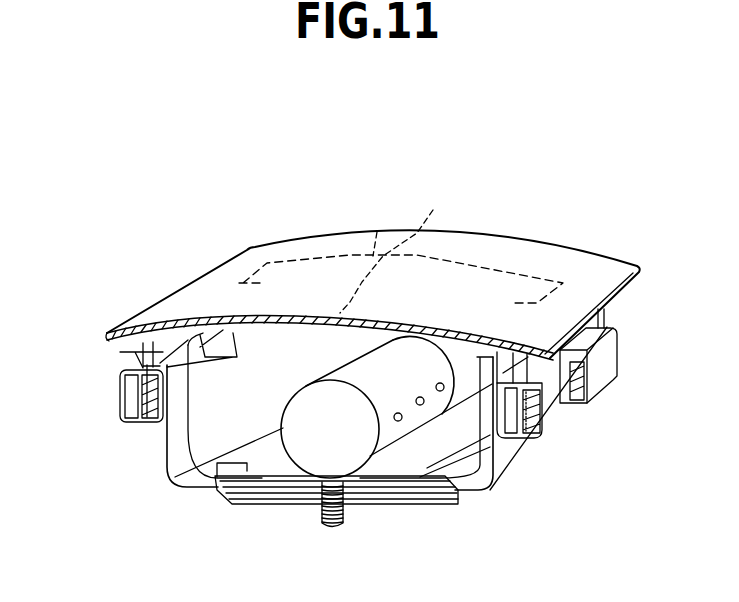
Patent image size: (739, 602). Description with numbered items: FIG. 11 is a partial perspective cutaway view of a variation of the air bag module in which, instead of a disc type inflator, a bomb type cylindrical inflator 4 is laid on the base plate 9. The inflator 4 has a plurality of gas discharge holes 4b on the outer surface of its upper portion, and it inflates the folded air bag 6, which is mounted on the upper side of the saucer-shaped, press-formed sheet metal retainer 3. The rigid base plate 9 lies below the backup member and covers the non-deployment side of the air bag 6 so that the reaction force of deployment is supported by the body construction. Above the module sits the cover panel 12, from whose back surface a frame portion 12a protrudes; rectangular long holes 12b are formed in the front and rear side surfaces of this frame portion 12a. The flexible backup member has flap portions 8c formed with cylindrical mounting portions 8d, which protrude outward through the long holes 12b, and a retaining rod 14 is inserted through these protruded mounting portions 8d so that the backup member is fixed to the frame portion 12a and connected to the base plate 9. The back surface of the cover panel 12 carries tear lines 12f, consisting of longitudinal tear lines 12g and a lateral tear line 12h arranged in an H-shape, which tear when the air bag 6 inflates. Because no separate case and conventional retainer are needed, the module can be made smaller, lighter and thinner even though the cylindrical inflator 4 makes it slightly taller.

The retainer 3 is at (223, 467).
The inflator 4 is at (423, 430).
The gas discharge holes 4b is at (397, 421).
The air bag 6 is at (460, 480).
The flap portion 8c is at (167, 460).
The cylindrical mounting portion 8d is at (117, 395).
The base plate 9 is at (280, 500).
The cover panel 12 is at (489, 248).
The frame portion 12a is at (147, 417).
The long hole 12b is at (137, 363).
The tear lines 12f is at (507, 163).
The longitudinal tear lines 12g is at (377, 232).
The lateral tear line 12h is at (433, 210).
The retaining rod 14 is at (117, 410).